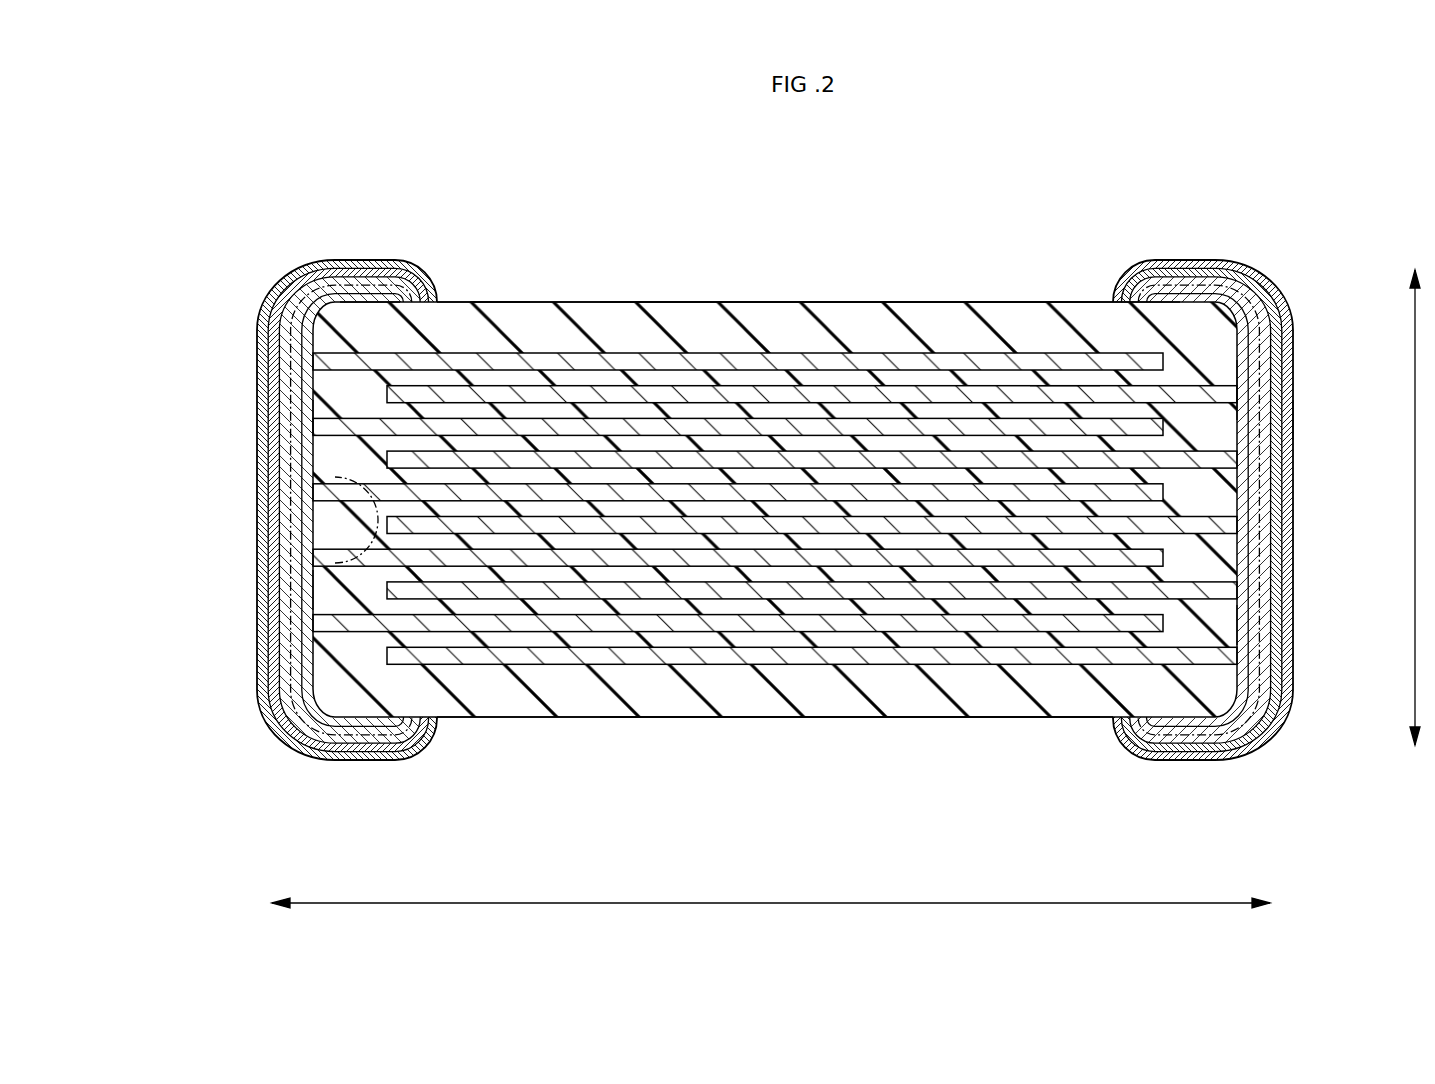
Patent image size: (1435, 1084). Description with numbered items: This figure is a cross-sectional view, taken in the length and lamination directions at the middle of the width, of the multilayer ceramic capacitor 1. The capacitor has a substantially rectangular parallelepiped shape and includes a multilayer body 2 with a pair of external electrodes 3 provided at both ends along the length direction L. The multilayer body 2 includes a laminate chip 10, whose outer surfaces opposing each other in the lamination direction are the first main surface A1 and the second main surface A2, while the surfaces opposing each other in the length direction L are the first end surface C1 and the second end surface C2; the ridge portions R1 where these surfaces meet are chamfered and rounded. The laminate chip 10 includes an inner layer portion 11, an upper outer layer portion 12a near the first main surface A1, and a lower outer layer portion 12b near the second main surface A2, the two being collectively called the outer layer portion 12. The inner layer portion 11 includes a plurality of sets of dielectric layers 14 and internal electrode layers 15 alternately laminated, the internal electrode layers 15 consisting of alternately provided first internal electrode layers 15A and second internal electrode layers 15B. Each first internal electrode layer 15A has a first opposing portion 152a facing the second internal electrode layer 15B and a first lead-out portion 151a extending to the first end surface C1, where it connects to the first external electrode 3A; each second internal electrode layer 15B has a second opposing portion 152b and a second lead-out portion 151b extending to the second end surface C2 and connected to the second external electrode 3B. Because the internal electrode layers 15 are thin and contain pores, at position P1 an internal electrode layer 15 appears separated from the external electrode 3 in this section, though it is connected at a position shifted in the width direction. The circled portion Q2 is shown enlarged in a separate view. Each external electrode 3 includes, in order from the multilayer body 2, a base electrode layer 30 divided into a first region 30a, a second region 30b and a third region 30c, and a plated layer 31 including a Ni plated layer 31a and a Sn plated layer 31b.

The multilayer ceramic capacitor 1 is at (1210, 236).
The multilayer body 2 is at (983, 287).
The external electrodes 3 is at (755, 600).
The first external electrode 3A is at (162, 822).
The second external electrode 3B is at (1308, 520).
The laminate chip 10 is at (604, 300).
The inner layer portion 11 is at (313, 663).
The outer layer portion 12 is at (775, 509).
The upper outer layer portion 12a is at (762, 316).
The lower outer layer portion 12b is at (760, 690).
The dielectric layer 14 is at (332, 386).
The internal electrode layer 15 is at (207, 392).
The first internal electrode layer 15A is at (316, 430).
The second internal electrode layer 15B is at (326, 475).
The base electrode layer 30 is at (255, 780).
The first region 30a is at (368, 745).
The second region 30b is at (326, 740).
The third region 30c is at (298, 728).
The plated layer 31 is at (212, 712).
The Ni plated layer 31a is at (276, 718).
The Sn plated layer 31b is at (262, 695).
The first lead-out portion 151a is at (370, 357).
The second lead-out portion 151b is at (1197, 390).
The first opposing portion 152a is at (1143, 353).
The second opposing portion 152b is at (1065, 390).
The first main surface A1 is at (905, 300).
The second main surface A2 is at (900, 720).
The first end surface C1 is at (312, 590).
The second end surface C2 is at (1240, 627).
The position P1 is at (330, 408).
The circled portion Q2 is at (373, 548).
The ridge portion R1 is at (500, 303).
The length direction L is at (771, 919).